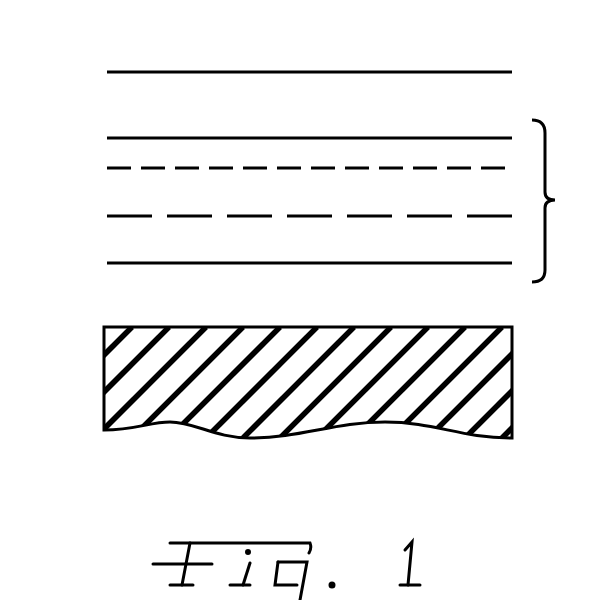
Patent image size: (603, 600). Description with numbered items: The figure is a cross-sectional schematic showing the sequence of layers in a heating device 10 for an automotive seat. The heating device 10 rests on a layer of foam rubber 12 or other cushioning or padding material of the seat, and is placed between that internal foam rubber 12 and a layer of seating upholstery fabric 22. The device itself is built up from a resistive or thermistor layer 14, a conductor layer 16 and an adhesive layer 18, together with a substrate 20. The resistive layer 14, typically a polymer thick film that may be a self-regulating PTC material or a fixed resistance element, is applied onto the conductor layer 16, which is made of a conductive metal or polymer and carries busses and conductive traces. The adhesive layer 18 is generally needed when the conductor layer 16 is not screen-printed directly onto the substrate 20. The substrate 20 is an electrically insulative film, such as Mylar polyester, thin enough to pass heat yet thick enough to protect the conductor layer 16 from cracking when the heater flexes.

The heating device 10 is at (567, 201).
The foam rubber 12 is at (118, 363).
The resistive or thermistor layer 14 is at (122, 263).
The conductor layer 16 is at (123, 216).
The adhesive layer 18 is at (117, 168).
The substrate 20 is at (118, 138).
The seating upholstery fabric 22 is at (117, 72).